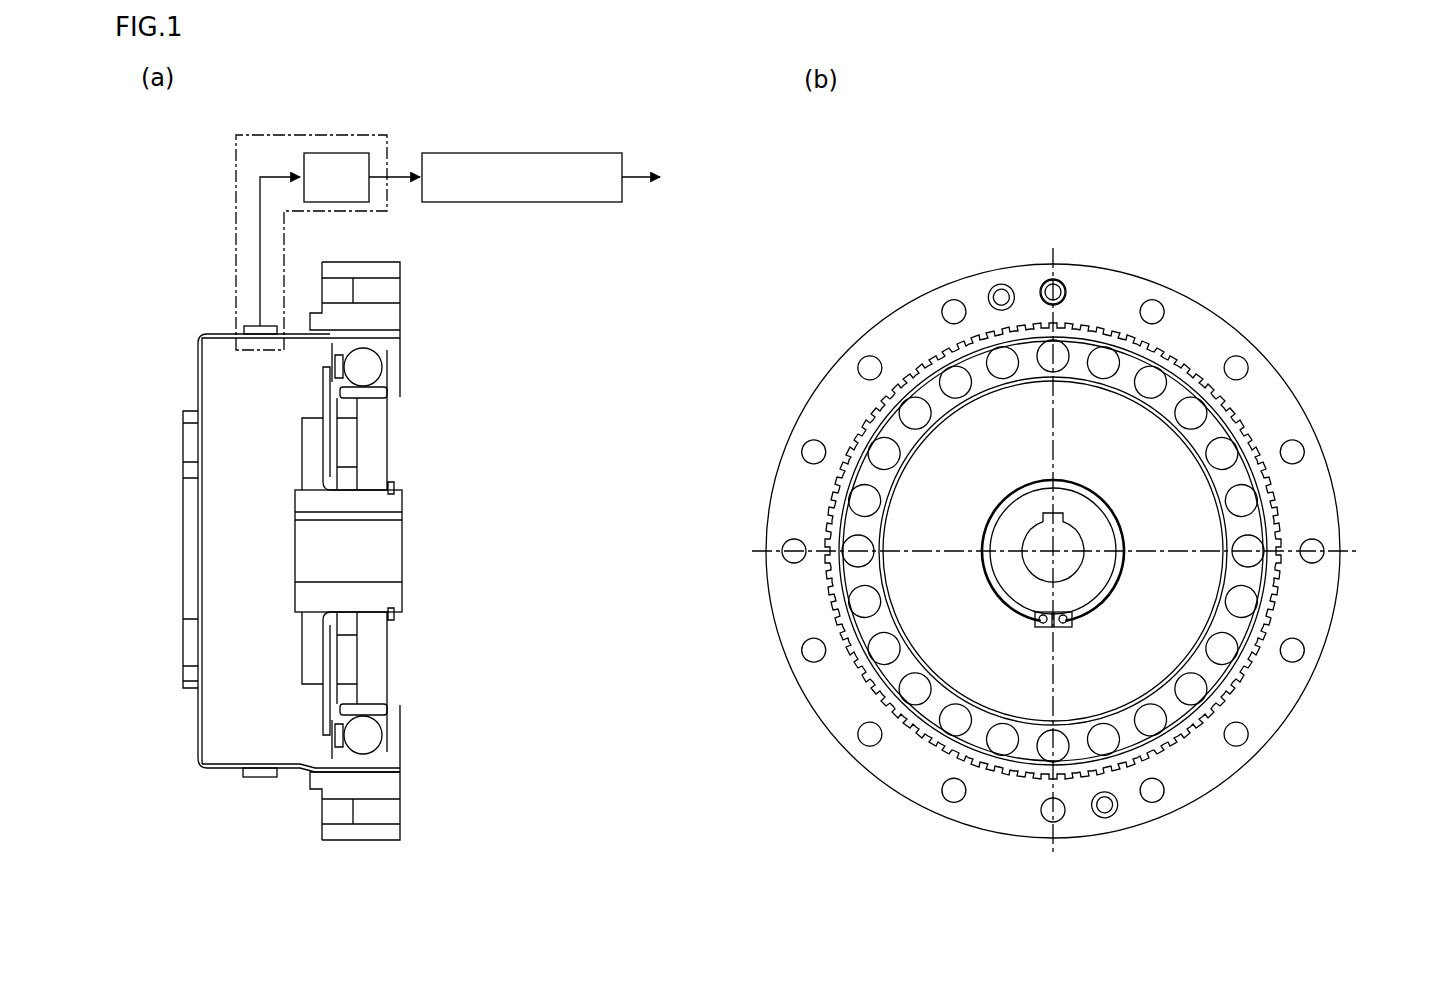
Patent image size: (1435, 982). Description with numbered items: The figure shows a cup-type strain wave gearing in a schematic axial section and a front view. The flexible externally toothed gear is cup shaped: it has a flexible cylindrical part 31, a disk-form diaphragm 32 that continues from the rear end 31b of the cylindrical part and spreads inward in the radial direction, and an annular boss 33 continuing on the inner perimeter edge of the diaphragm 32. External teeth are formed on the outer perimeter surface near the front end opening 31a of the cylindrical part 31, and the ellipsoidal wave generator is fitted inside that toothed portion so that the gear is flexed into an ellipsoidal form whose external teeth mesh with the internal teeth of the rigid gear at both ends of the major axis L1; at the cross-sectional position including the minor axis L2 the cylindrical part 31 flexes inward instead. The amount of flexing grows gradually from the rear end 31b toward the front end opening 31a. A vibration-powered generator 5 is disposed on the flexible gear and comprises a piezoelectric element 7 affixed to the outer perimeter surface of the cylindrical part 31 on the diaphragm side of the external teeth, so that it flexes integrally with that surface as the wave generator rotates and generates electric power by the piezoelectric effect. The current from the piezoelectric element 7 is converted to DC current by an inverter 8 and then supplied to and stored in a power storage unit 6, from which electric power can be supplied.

The vibration-powered generator 5 is at (284, 131).
The power storage unit 6 is at (516, 151).
The piezoelectric element 7 is at (249, 323).
The inverter 8 is at (358, 153).
The cylindrical part 31 is at (233, 763).
The front end opening 31a is at (403, 770).
The rear end 31b is at (197, 758).
The diaphragm 32 is at (202, 730).
The boss 33 is at (202, 650).
The major axis L1 is at (1053, 440).
The minor axis L2 is at (943, 551).